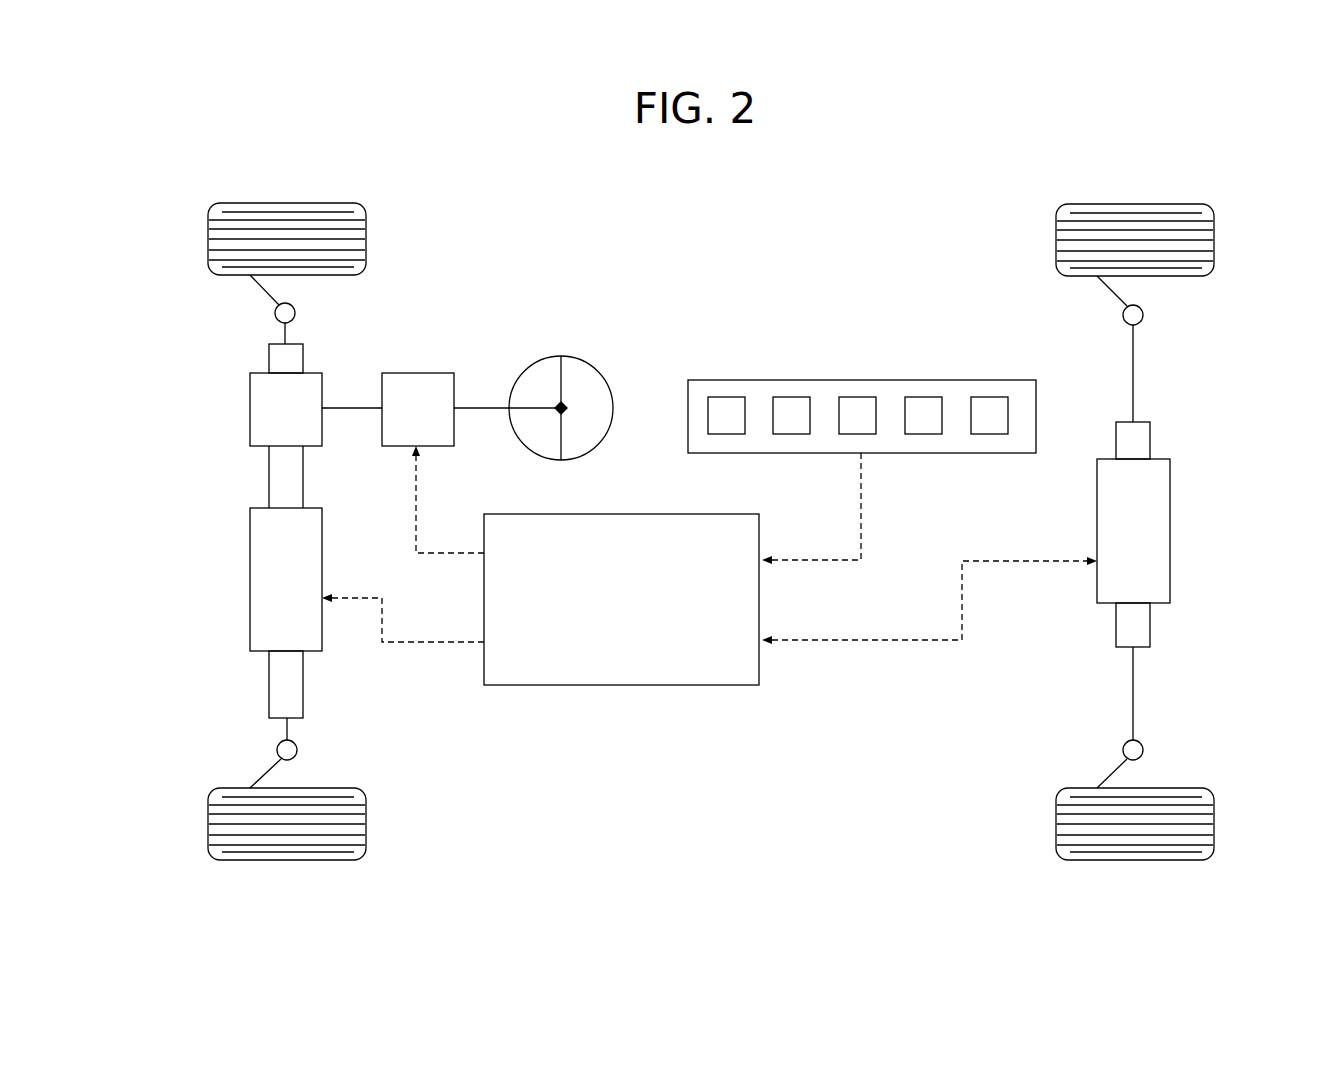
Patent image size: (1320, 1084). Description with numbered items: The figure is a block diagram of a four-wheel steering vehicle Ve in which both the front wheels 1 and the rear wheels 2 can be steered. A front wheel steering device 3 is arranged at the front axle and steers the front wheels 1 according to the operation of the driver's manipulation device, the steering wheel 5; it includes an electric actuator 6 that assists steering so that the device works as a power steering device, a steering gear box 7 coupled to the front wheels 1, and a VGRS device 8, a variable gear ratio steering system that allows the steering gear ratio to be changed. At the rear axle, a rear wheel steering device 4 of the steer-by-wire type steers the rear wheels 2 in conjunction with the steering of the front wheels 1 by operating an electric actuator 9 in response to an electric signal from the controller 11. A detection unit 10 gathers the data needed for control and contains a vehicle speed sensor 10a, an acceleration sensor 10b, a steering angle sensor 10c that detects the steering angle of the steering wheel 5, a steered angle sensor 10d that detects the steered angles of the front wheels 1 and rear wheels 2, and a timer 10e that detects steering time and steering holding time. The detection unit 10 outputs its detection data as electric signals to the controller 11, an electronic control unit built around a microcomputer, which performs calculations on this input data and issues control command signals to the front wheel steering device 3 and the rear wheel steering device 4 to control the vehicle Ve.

The vehicle Ve is at (950, 194).
The front wheels 1 is at (292, 203).
The rear wheels 2 is at (1135, 204).
The front wheel steering device 3 is at (226, 531).
The rear wheel steering device 4 is at (1185, 532).
The steering wheel 5 is at (581, 362).
The electric actuator 6 is at (250, 587).
The steering gear box 7 is at (250, 404).
The VGRS device 8 is at (417, 373).
The electric actuator 9 is at (1170, 536).
The detection unit 10 is at (892, 393).
The vehicle speed sensor 10a is at (733, 397).
The acceleration sensor 10b is at (795, 397).
The steering angle sensor 10c is at (858, 397).
The steered angle sensor 10d is at (924, 397).
The timer 10e is at (990, 397).
The controller 11 is at (611, 685).